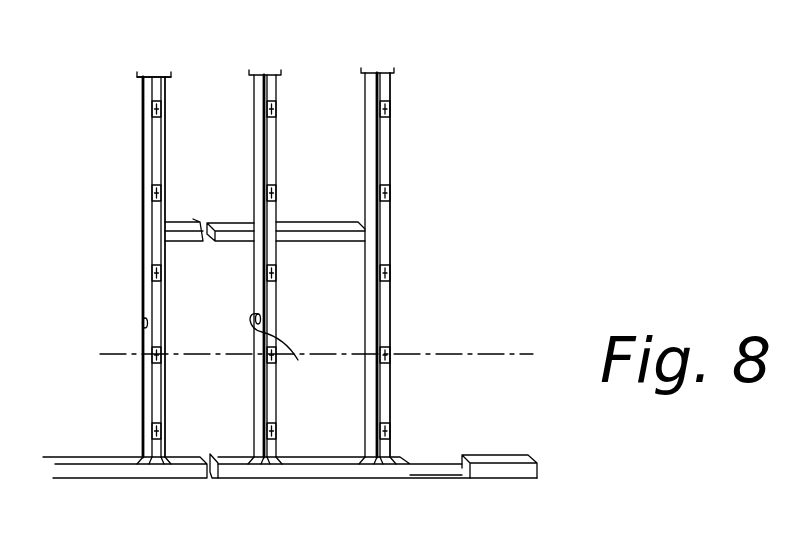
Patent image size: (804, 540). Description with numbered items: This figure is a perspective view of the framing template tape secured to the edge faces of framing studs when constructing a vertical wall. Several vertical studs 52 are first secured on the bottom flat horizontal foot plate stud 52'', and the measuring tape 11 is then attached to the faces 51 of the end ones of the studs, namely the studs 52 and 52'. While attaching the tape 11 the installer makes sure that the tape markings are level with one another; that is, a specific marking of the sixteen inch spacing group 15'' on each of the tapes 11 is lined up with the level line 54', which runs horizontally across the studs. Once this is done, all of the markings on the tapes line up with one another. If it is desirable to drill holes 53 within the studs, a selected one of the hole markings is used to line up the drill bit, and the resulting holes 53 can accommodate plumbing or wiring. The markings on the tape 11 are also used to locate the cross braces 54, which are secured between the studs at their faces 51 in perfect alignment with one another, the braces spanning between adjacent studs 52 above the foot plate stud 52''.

The measuring tape 11 is at (157, 388).
The 16 inch spacing group 15'' is at (270, 270).
The face 51 is at (155, 128).
The stud 52 is at (443, 265).
The stud 52' is at (135, 49).
The bottom flat horizontal foot plate stud 52'' is at (304, 458).
The hole 53 is at (143, 322).
The cross brace 54 is at (322, 194).
The level line 54' is at (323, 319).